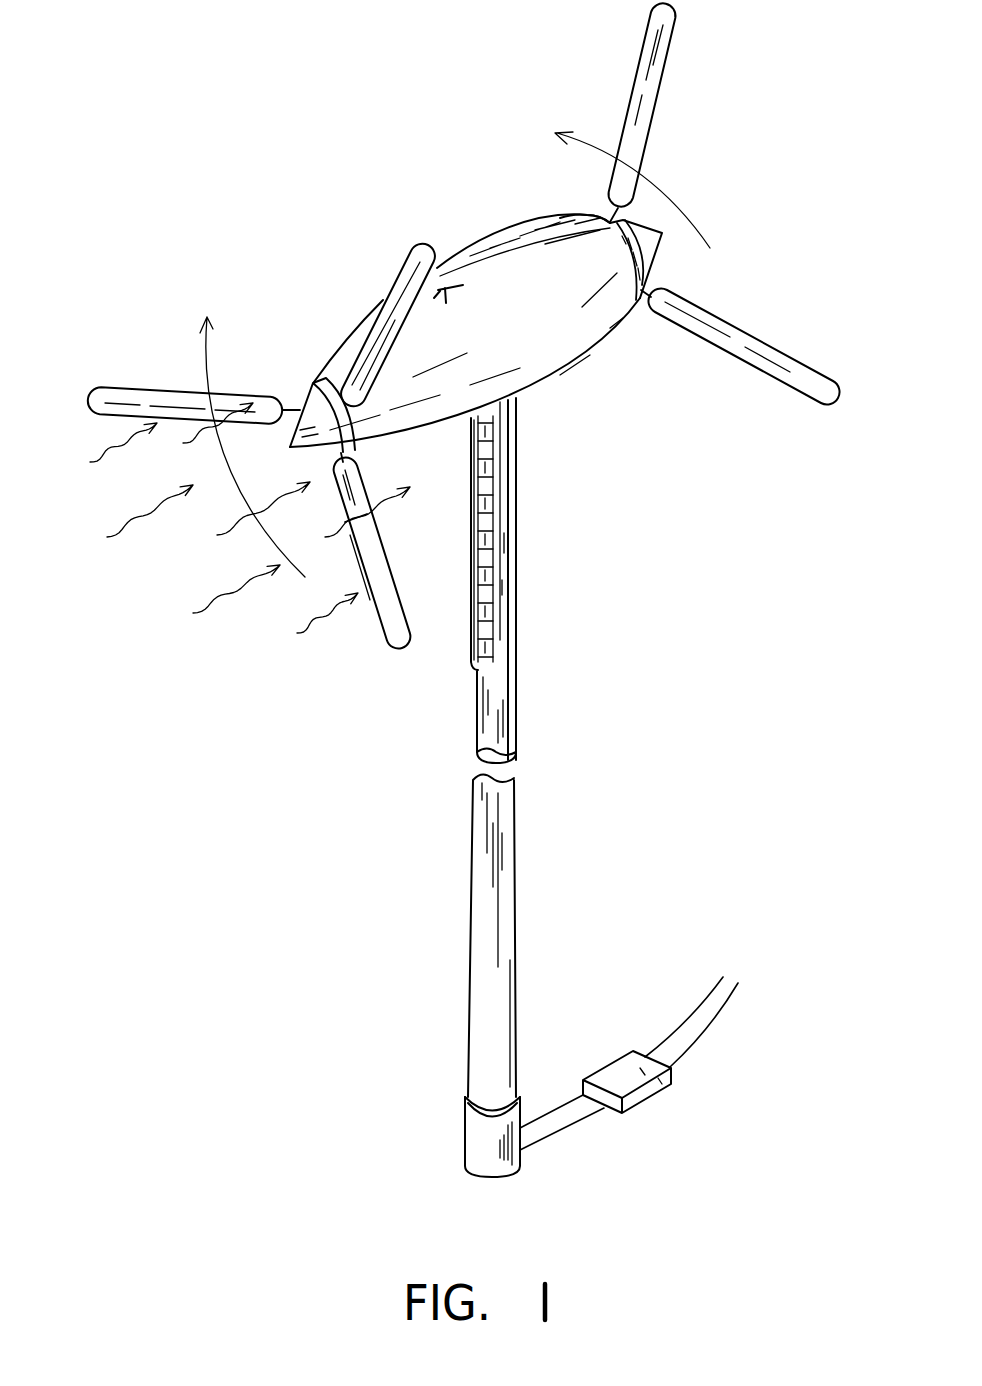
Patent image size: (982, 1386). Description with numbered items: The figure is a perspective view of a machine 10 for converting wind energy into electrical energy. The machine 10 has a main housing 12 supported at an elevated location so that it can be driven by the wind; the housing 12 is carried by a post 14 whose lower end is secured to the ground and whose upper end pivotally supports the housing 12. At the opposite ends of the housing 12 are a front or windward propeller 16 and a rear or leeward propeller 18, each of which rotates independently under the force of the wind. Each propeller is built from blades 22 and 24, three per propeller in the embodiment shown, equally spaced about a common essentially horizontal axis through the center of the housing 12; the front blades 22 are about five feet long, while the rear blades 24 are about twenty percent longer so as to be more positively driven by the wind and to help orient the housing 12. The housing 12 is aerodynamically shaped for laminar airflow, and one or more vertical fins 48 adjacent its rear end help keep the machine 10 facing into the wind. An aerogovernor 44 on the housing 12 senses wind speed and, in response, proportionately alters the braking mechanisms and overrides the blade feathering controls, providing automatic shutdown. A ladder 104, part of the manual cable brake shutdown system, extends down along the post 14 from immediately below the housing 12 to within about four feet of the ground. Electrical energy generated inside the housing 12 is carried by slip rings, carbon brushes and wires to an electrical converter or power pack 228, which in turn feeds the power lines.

The machine 10 is at (521, 117).
The main housing 12 is at (537, 393).
The post 14 is at (512, 875).
The front or windward propeller 16 is at (383, 637).
The rear or leeward propeller 18 is at (650, 118).
The front blades 22 is at (122, 389).
The rear blades 24 is at (788, 390).
The aerogovernor 44 is at (463, 286).
The vertical fins 48 is at (580, 217).
The ladder 104 is at (518, 676).
The electrical converter or power pack 228 is at (655, 1086).